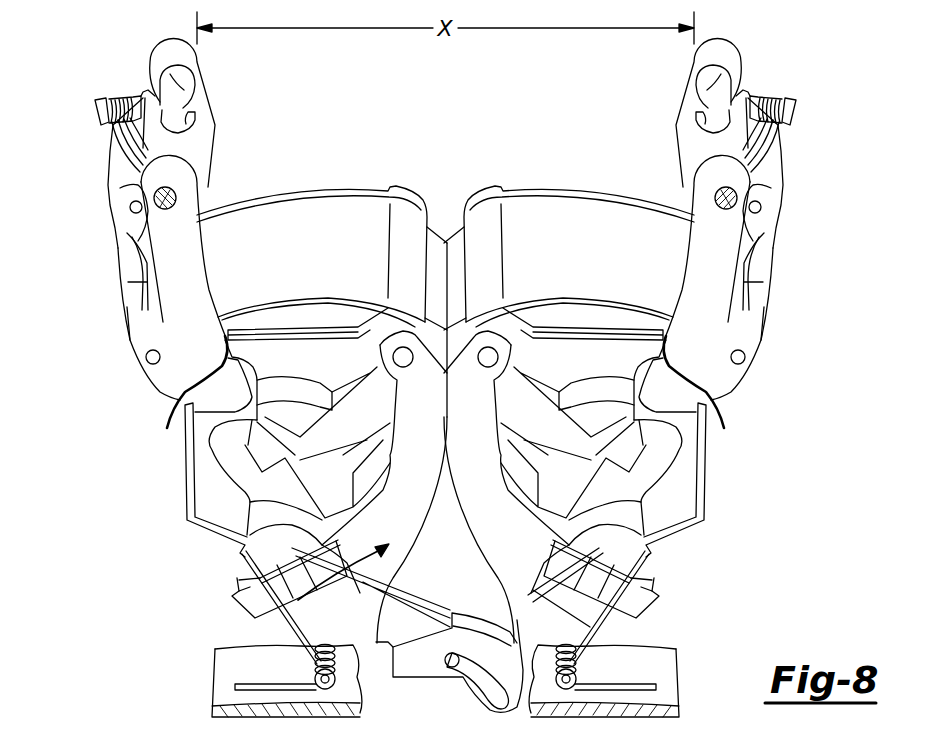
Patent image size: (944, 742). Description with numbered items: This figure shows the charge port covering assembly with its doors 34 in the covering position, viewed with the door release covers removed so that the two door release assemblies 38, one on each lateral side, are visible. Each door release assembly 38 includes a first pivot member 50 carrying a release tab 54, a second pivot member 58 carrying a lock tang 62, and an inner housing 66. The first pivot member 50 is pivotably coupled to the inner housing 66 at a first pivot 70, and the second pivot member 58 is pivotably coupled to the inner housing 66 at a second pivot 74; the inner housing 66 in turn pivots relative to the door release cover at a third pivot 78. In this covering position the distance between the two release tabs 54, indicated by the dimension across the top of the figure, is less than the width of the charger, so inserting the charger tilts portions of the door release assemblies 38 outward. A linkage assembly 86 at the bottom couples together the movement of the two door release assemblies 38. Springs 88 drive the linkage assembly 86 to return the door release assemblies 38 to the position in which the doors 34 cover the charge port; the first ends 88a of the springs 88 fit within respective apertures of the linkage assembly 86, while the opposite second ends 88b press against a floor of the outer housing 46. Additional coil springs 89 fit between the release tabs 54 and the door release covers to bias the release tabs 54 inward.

The doors 34 is at (309, 252).
The door release assemblies 38 is at (457, 220).
The outer housing 46 is at (222, 680).
The first pivot member 50 is at (145, 168).
The release tab 54 is at (176, 73).
The second pivot member 58 is at (127, 280).
The lock tang 62 is at (445, 392).
The inner housing 66 is at (160, 330).
The first pivot 70 is at (131, 212).
The second pivot 74 is at (150, 363).
The third pivot 78 is at (177, 202).
The linkage assembly 86 is at (300, 607).
The springs 88 is at (343, 647).
The first ends of the springs 88a is at (242, 553).
The second ends of the springs 88b is at (250, 692).
The springs 89 is at (130, 123).